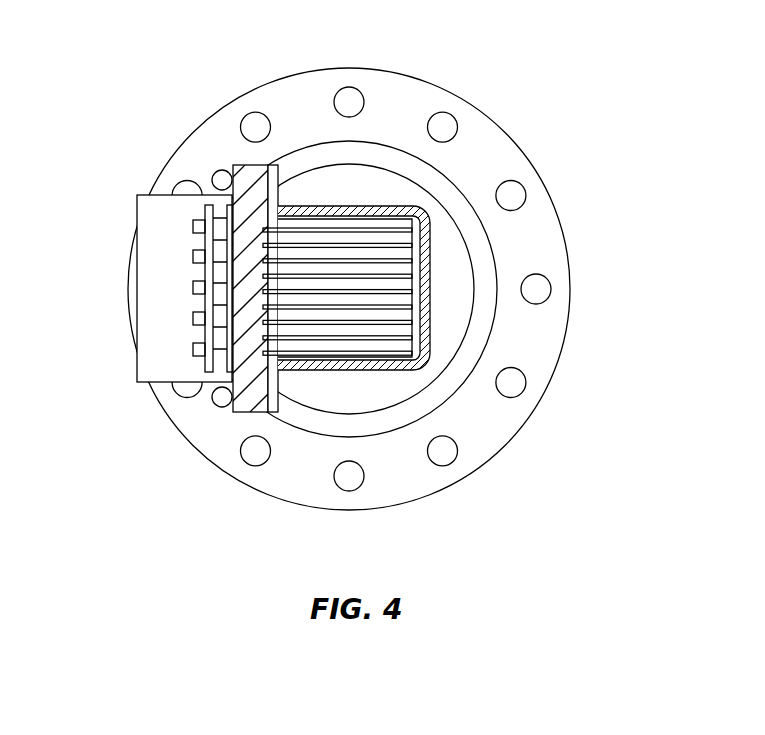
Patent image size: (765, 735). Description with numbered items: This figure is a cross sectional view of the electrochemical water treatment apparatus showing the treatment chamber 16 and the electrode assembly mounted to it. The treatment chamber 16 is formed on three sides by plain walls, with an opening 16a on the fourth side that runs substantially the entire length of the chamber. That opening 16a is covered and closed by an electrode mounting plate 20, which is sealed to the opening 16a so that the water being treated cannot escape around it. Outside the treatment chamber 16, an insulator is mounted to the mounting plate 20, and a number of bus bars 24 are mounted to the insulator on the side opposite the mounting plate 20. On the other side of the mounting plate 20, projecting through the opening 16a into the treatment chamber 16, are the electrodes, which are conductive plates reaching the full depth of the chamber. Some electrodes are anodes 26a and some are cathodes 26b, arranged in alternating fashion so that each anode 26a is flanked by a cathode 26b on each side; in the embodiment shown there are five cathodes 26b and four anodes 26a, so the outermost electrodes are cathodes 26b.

The treatment chamber 16 is at (327, 210).
The opening 16a is at (235, 182).
The electrode mounting plate 20 is at (233, 412).
The bus bars 24 is at (200, 278).
The anodes 26a is at (370, 334).
The cathodes 26b is at (432, 226).